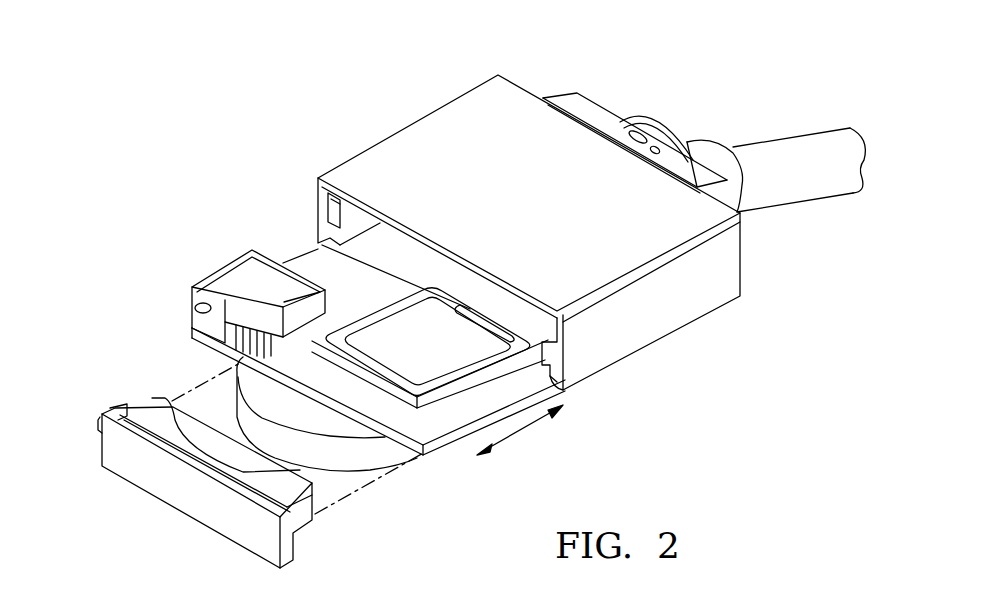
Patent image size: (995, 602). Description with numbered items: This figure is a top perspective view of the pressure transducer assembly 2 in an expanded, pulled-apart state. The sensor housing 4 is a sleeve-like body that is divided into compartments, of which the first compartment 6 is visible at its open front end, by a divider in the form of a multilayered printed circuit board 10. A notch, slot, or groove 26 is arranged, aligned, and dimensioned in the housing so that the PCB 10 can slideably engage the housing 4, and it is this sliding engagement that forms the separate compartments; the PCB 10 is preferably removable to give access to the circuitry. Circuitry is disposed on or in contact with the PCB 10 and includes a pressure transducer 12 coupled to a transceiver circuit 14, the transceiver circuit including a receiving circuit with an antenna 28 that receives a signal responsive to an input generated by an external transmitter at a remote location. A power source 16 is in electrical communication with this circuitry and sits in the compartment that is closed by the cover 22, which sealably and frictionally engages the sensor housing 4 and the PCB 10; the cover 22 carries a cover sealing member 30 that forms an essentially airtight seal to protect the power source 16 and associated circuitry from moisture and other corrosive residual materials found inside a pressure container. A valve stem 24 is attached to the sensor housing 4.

The pressure transducer assembly 2 is at (428, 100).
The sensor housing 4 is at (527, 110).
The first compartment 6 is at (336, 208).
The multilayered printed circuit board 10 is at (443, 440).
The pressure transducer 12 is at (198, 307).
The transceiver circuit 14 is at (238, 270).
The power source 16 is at (307, 412).
The cover 22 is at (185, 487).
The valve stem 24 is at (805, 150).
The groove 26 is at (562, 388).
The antenna 28 is at (452, 368).
The cover sealing member 30 is at (143, 427).